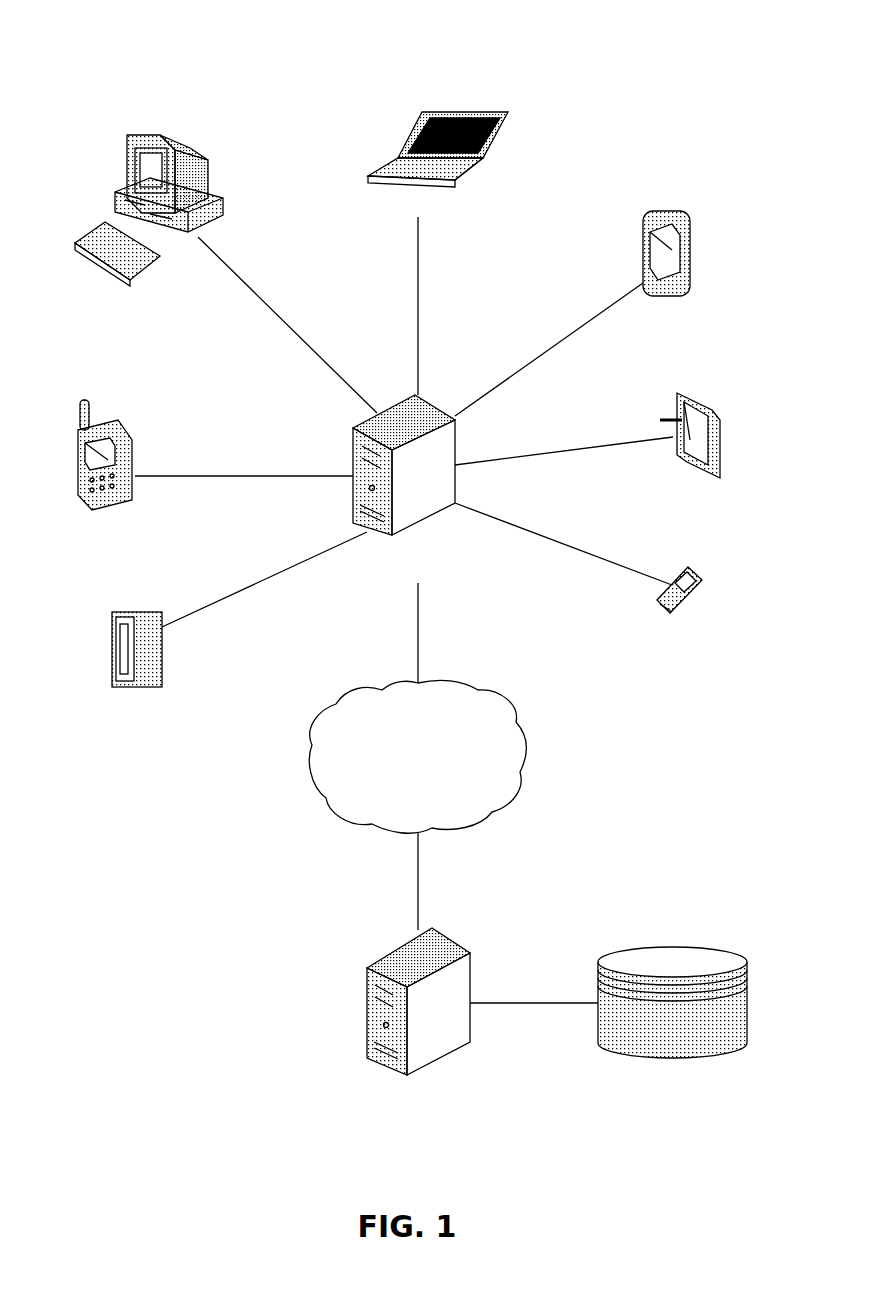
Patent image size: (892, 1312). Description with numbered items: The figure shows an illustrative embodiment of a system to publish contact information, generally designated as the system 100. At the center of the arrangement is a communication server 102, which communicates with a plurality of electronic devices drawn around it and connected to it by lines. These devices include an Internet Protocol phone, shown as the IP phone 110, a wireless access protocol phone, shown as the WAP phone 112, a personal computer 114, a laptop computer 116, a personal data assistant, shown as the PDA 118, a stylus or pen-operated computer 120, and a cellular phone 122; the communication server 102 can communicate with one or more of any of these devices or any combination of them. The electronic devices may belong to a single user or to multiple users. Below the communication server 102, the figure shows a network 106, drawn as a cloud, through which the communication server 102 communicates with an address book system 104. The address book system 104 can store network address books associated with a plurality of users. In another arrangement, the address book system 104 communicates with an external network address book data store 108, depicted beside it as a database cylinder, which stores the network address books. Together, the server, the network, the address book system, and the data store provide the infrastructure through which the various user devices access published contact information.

The communication system 100 is at (282, 78).
The communication server 102 is at (438, 403).
The address book system 104 is at (448, 936).
The network 106 is at (480, 697).
The network address book data store 108 is at (676, 947).
The Internet Protocol (IP) phone 110 is at (140, 612).
The wireless access protocol (WAP) phone 112 is at (118, 425).
The personal computer 114 is at (176, 138).
The laptop computer 116 is at (467, 112).
The personal data assistant (PDA) 118 is at (662, 216).
The pen-operated computer 120 is at (708, 405).
The cellular phone 122 is at (698, 575).